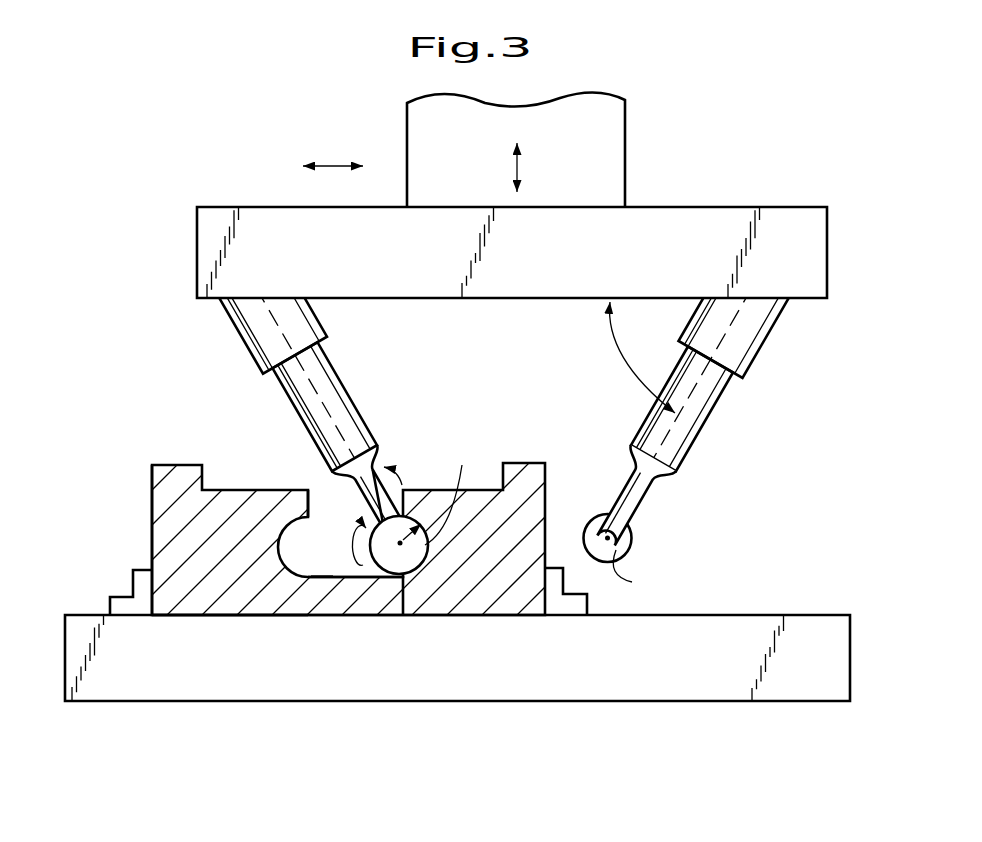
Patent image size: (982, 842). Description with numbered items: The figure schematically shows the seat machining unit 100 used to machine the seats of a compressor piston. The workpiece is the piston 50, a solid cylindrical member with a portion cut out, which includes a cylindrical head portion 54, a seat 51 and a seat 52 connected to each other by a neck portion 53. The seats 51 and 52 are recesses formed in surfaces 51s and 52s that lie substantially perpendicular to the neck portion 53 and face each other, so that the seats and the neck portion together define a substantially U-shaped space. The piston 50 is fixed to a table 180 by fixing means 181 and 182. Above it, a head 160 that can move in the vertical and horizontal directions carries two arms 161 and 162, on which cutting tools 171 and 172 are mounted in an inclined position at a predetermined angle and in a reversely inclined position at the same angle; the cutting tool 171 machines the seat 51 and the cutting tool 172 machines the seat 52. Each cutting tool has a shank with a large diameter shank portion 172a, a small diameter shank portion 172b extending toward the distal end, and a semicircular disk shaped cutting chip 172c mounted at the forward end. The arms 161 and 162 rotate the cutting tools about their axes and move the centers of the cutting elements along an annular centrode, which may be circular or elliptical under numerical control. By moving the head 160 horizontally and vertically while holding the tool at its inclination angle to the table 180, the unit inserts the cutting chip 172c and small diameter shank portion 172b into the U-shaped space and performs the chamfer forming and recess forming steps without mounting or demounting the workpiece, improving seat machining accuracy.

The seat machining unit 100 is at (815, 762).
The head 160 is at (808, 228).
The arm 161 is at (253, 332).
The arm 162 is at (757, 322).
The cutting tool 171 is at (315, 417).
The cutting tool 172 is at (709, 461).
The large diameter shank portion 172a is at (692, 433).
The small diameter shank portion 172b is at (655, 497).
The cutting chip 172c is at (612, 524).
The compressor piston 50 is at (366, 595).
The seat 51 is at (427, 575).
The surface 51s is at (383, 500).
The seat 52 is at (277, 548).
The surface 52s is at (312, 512).
The neck portion 53 is at (357, 607).
The head portion 54 is at (185, 603).
The table 180 is at (826, 650).
The fixing means 181 is at (552, 573).
The fixing means 182 is at (143, 578).